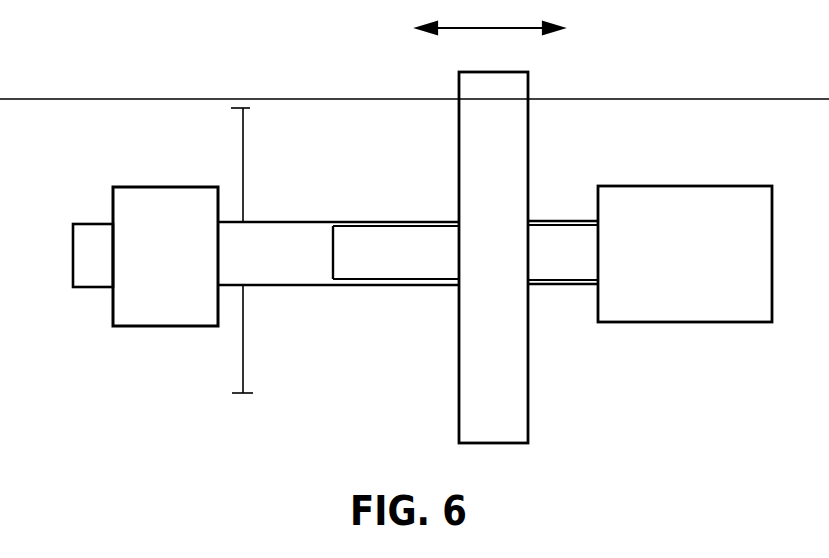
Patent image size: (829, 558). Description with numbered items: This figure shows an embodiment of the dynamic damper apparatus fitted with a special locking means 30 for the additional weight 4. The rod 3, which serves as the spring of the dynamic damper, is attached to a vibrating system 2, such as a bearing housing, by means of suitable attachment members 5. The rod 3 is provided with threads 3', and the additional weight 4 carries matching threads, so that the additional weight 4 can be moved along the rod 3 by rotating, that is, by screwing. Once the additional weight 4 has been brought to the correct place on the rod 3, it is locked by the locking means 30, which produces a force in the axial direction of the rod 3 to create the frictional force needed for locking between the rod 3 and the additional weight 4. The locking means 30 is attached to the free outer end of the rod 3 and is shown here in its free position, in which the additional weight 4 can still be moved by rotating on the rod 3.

The vibrating system 2 is at (215, 137).
The rod 3 is at (408, 280).
The threads 3' is at (465, 282).
The additional weight 4 is at (508, 123).
The attachment members 5 is at (166, 208).
The locking means 30 is at (633, 310).